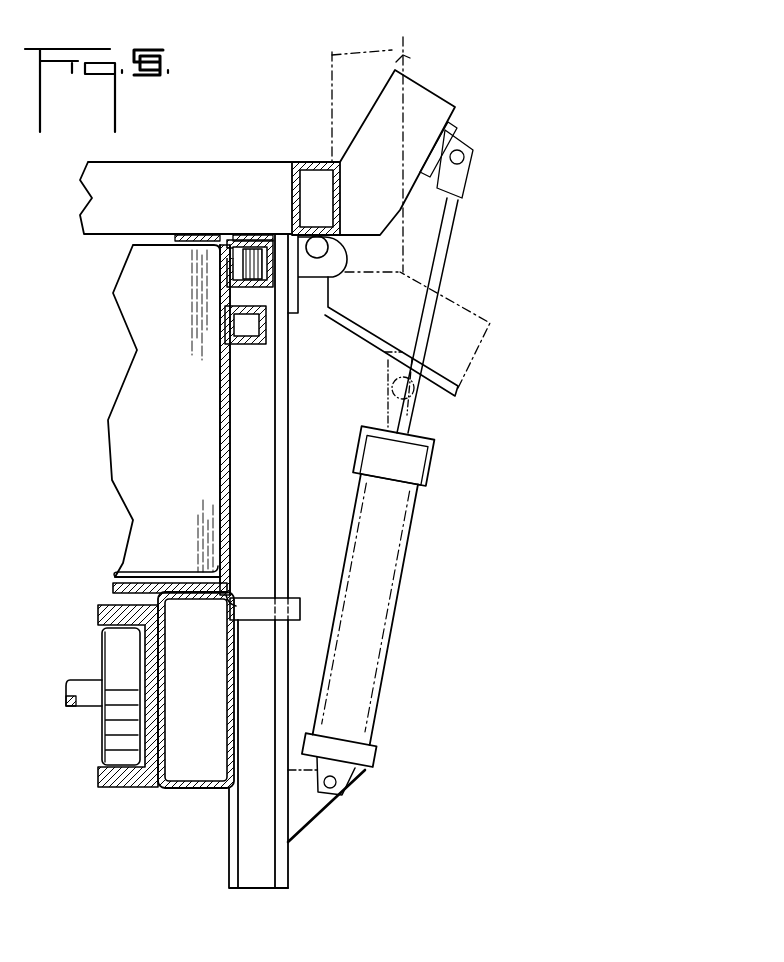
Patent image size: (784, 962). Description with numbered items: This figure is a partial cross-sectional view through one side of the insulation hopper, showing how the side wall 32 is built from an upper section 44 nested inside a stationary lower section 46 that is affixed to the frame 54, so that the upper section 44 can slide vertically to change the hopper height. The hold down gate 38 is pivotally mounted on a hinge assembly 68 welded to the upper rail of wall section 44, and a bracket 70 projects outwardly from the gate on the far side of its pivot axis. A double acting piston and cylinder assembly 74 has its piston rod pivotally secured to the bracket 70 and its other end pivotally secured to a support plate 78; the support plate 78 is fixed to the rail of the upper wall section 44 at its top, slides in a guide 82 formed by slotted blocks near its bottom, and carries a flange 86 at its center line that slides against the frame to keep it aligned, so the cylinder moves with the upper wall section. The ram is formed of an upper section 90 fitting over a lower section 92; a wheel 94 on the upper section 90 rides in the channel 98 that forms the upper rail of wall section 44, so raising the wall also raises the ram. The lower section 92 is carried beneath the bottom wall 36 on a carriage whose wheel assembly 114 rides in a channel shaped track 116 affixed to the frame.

The side wall 32 is at (248, 443).
The bottom wall 36 is at (150, 172).
The hold down gate 38 is at (398, 50).
The upper section 44 is at (220, 398).
The lower section 46 is at (232, 405).
The frame 54 is at (200, 785).
The hinge assembly 68 is at (316, 270).
The bracket 70 is at (420, 100).
The piston and cylinder assembly 74 is at (377, 637).
The support plate 78 is at (282, 500).
The guide 82 is at (258, 605).
The flange 86 is at (247, 870).
The upper section of ram 90 is at (190, 481).
The lower section of ram 92 is at (118, 576).
The wheel 94 is at (245, 247).
The channel 98 is at (262, 240).
The wheel assembly 114 is at (110, 718).
The track 116 is at (115, 778).